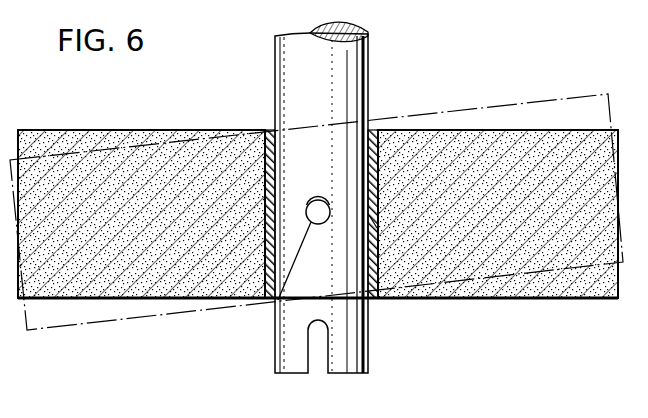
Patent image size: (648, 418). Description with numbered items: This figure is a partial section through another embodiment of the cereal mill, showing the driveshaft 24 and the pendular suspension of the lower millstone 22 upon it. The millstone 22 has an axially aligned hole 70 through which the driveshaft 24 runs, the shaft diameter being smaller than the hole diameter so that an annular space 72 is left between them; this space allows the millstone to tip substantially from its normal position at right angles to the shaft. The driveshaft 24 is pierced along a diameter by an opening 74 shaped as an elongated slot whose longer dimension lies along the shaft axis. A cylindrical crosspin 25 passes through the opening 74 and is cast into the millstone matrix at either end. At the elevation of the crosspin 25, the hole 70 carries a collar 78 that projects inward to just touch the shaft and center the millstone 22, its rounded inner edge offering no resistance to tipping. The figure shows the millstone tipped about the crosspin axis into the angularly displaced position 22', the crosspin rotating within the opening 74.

The lower millstone 22 is at (320, 233).
The angularly displaced position of the millstone 22' is at (316, 200).
The driveshaft 24 is at (348, 105).
The crosspin 25 is at (278, 300).
The axially aligned hole 70 is at (263, 183).
The annular space 72 is at (270, 130).
The opening 74 is at (326, 200).
The collar 78 is at (374, 221).